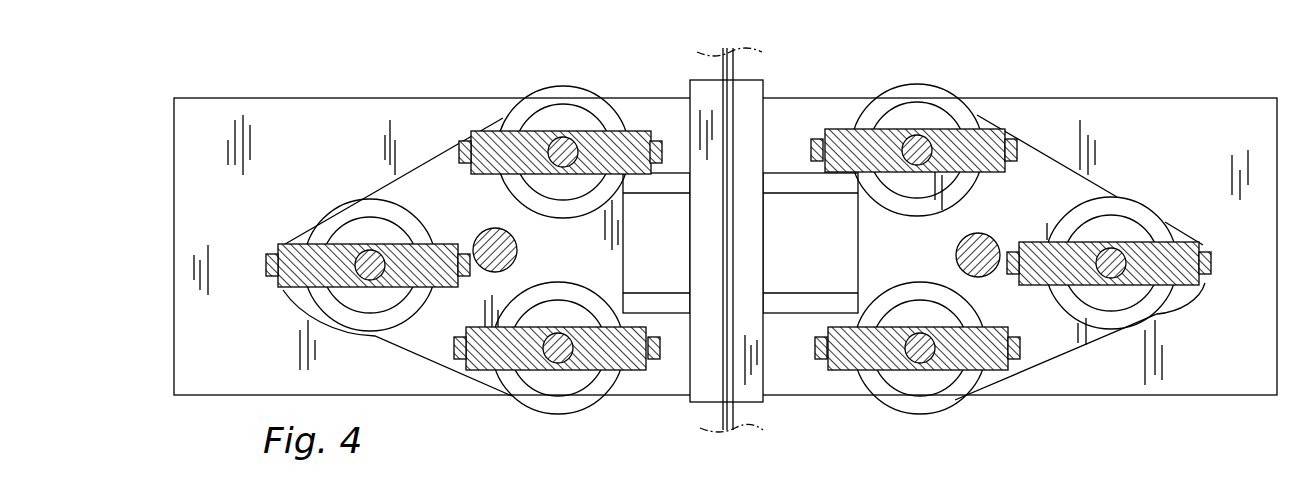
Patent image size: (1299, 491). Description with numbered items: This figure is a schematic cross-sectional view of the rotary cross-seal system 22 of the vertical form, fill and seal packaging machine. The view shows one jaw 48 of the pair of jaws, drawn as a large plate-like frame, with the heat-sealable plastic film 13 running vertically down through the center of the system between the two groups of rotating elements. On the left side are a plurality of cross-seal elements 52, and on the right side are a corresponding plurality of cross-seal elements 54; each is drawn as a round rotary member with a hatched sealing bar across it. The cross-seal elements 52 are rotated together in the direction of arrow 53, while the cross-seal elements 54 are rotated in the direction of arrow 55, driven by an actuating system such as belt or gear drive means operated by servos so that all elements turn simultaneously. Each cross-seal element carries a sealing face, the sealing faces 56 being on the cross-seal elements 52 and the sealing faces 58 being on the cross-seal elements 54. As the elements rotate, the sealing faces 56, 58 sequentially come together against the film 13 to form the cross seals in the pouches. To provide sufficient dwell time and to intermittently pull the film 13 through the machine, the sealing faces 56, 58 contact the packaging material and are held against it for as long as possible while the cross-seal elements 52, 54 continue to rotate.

The jaw 48 is at (238, 412).
The rotary cross-seal system 22 is at (830, 86).
The heat-sealable plastic film 13 is at (723, 100).
The cross-seal elements 52 is at (298, 243).
The cross-seal elements 54 is at (862, 128).
The arrow 53 is at (548, 60).
The arrow 55 is at (932, 58).
The sealing faces 56 is at (663, 150).
The sealing faces 58 is at (820, 138).